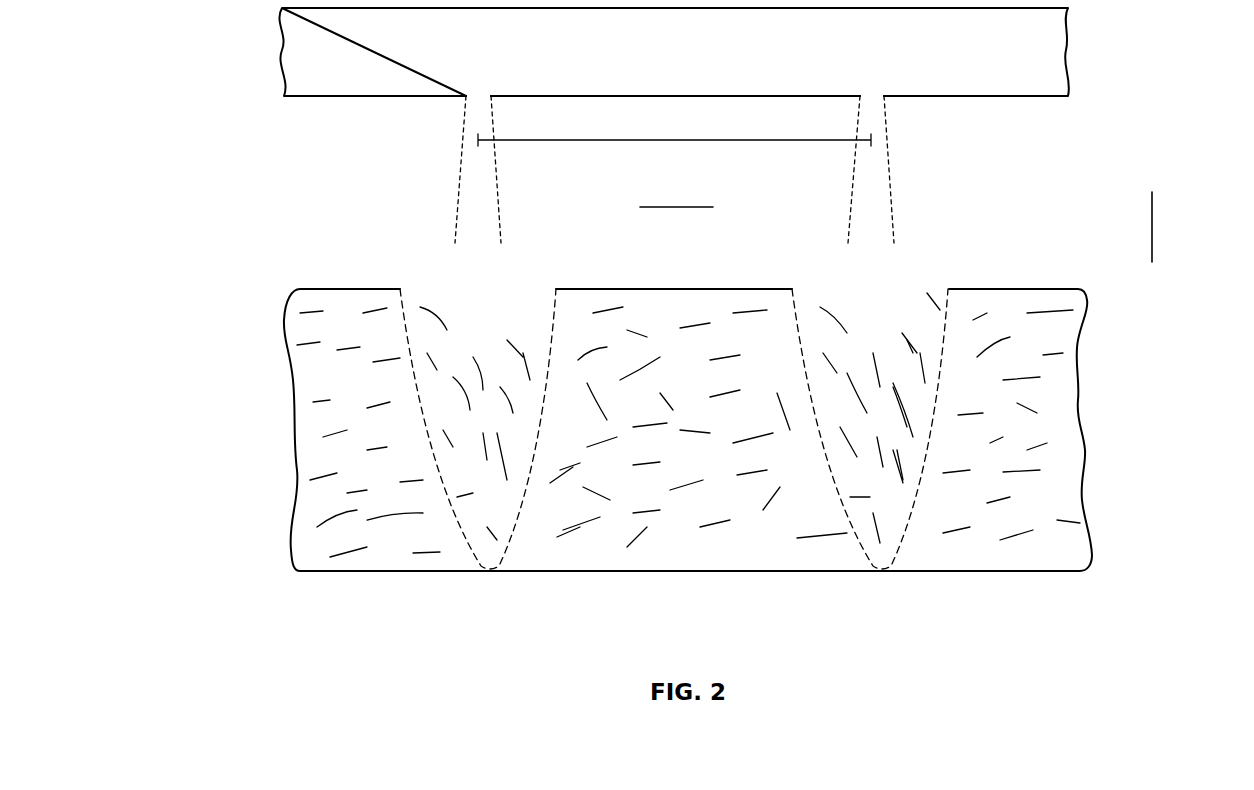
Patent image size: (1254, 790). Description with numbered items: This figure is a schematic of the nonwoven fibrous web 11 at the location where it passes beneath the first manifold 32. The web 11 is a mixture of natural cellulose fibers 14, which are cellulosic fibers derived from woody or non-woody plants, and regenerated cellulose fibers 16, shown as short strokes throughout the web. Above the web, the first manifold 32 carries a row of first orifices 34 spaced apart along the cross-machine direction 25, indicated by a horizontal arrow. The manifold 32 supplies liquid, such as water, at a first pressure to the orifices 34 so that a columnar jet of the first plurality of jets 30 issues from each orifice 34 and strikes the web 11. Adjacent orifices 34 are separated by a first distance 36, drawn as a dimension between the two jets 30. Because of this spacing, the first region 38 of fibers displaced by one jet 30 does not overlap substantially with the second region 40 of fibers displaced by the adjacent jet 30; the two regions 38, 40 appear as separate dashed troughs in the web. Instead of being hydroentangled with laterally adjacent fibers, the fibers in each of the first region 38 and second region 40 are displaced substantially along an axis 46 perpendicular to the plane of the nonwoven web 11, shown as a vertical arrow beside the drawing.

The nonwoven fibrous web 11 is at (953, 623).
The natural cellulose fibers 14 is at (311, 343).
The regenerated cellulose fibers 16 is at (340, 516).
The cross-machine direction 25 is at (672, 207).
The first plurality of jets 30 is at (470, 205).
The first manifold 32 is at (1043, 97).
The first orifices 34 is at (442, 120).
The first distance 36 is at (672, 139).
The first region 38 is at (520, 522).
The second region 40 is at (847, 537).
The axis perpendicular to the plane of the web 46 is at (1153, 228).